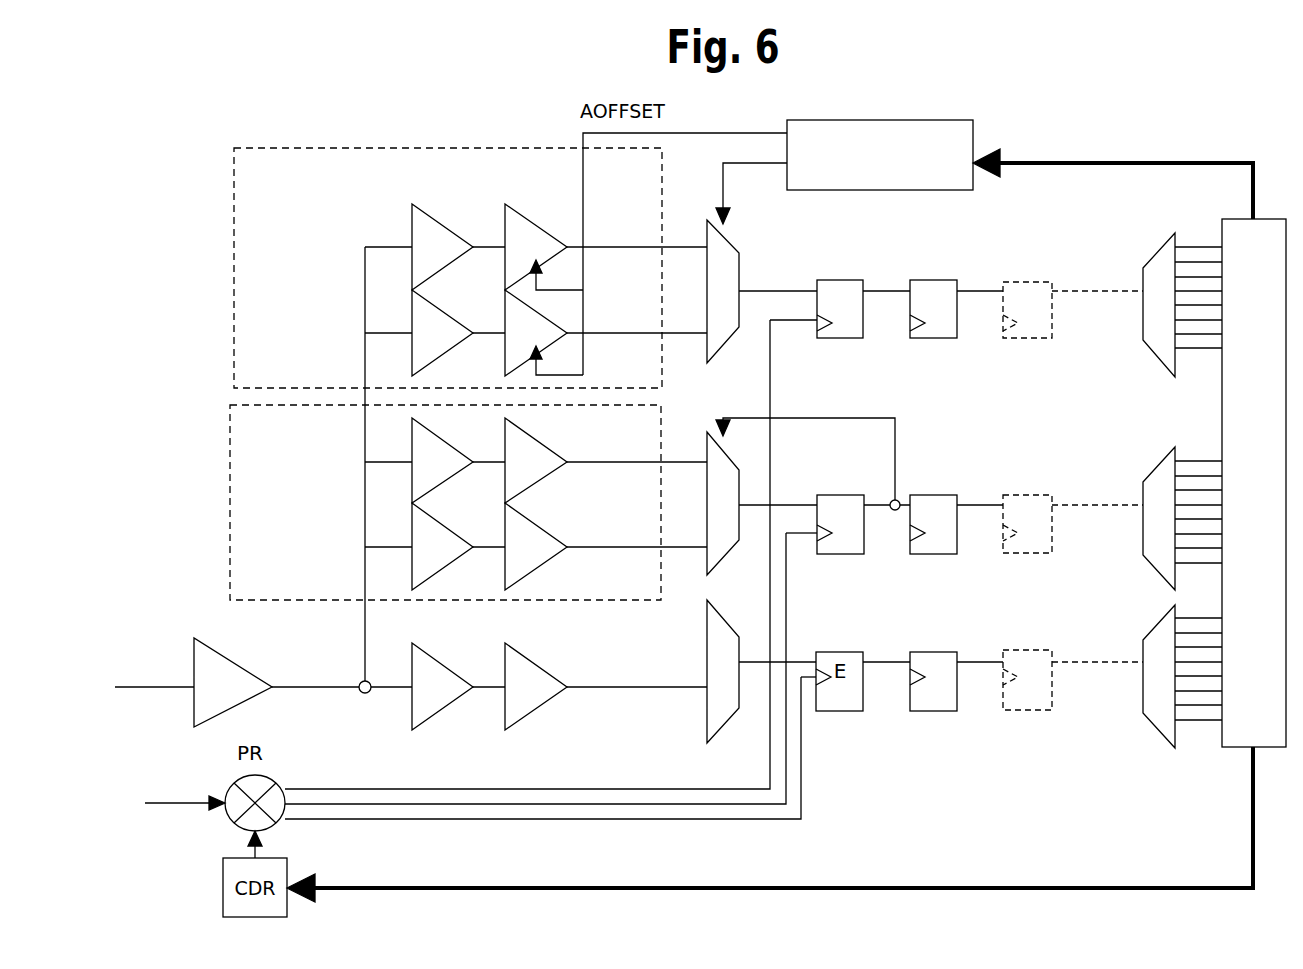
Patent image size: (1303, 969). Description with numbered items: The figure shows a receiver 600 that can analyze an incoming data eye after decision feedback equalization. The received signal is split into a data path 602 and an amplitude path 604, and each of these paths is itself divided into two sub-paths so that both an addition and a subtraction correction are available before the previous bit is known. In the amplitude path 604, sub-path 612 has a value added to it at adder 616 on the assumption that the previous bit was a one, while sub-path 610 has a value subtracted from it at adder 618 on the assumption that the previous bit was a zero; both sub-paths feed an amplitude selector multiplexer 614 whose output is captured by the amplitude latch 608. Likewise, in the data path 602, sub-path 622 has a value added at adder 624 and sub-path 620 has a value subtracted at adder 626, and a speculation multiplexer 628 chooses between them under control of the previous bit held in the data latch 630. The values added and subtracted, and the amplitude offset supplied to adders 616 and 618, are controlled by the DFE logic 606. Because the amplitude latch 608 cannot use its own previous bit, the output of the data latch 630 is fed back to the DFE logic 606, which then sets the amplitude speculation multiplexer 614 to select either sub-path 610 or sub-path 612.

The DFE receiver 600 is at (198, 397).
The data path 602 is at (231, 499).
The amplitude path 604 is at (234, 235).
The DFE logic 606 is at (853, 120).
The amplitude latch 608 is at (845, 280).
The sub-path 610 is at (386, 333).
The sub-path 612 is at (386, 247).
The amplitude selector multiplexer 614 is at (740, 252).
The adder 616 is at (505, 213).
The adder 618 is at (505, 347).
The sub-path 620 is at (385, 543).
The sub-path 622 is at (378, 463).
The adder 624 is at (545, 440).
The adder 626 is at (540, 568).
The speculation multiplexer 628 is at (725, 552).
The data latch 630 is at (833, 495).